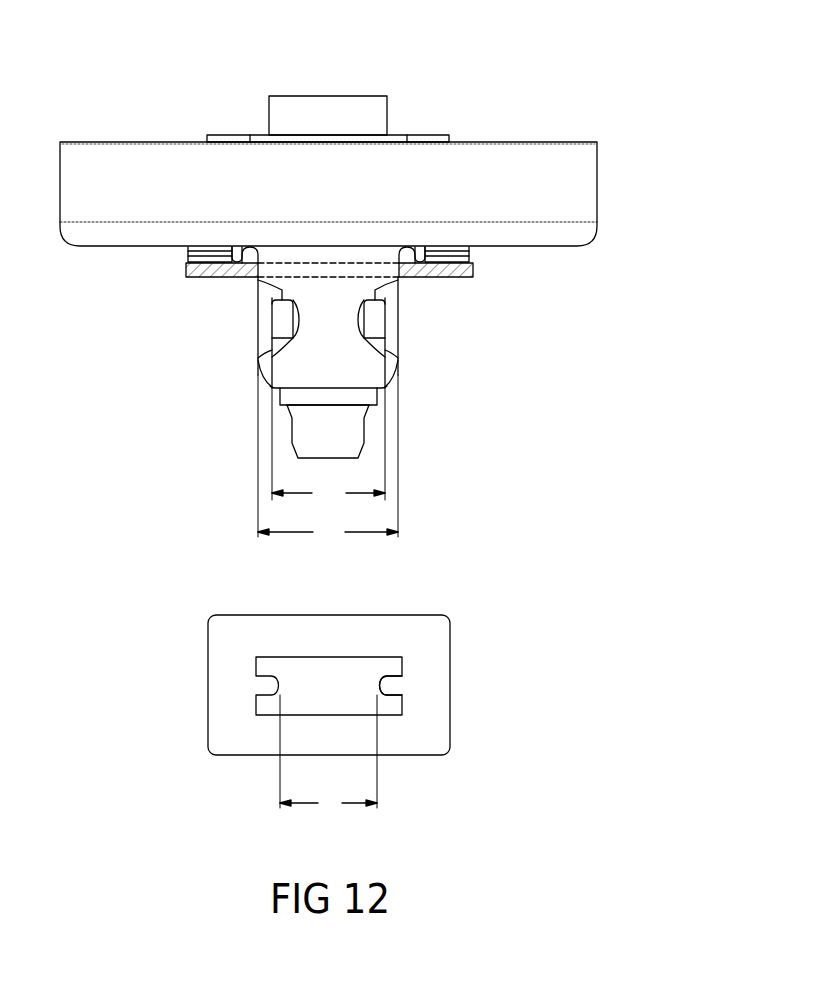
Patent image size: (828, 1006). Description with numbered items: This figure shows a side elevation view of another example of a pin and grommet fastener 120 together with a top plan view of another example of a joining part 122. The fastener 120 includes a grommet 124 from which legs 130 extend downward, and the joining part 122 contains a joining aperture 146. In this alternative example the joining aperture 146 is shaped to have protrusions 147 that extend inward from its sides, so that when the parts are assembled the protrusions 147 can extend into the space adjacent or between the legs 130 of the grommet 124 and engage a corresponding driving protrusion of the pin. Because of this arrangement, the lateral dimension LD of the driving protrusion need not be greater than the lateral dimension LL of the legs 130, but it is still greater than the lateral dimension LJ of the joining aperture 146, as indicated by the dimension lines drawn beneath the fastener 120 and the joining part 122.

The pin and grommet fastener 120 is at (166, 84).
The grommet 124 is at (597, 182).
The legs 130 is at (330, 318).
The mounting plate 122 is at (328, 615).
The joining aperture 146 is at (327, 683).
The protrusions 147 is at (388, 685).